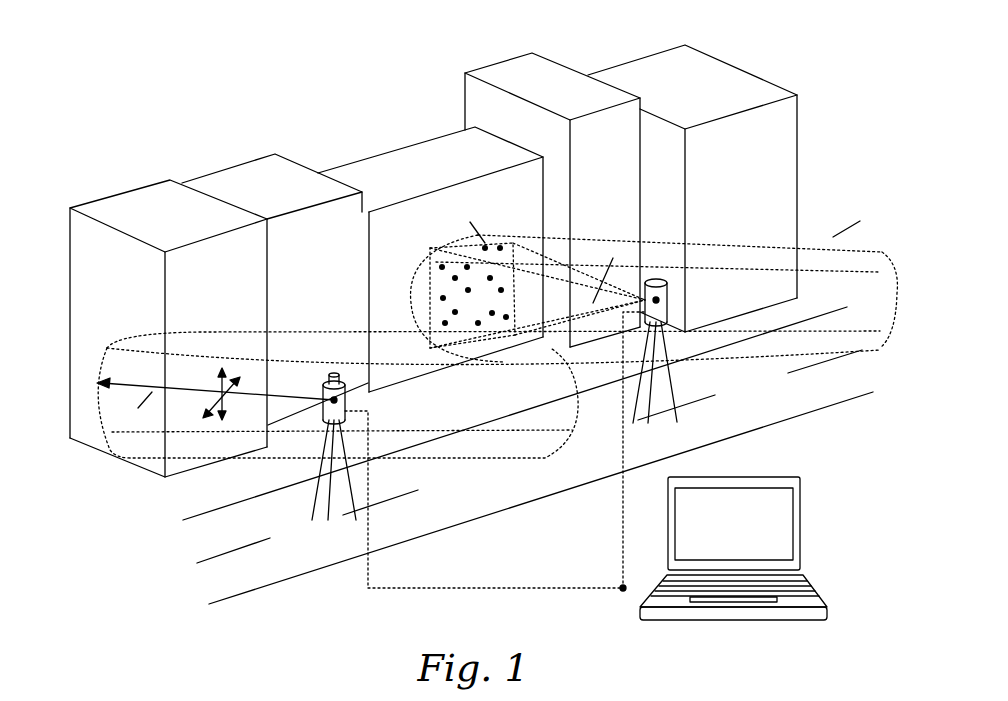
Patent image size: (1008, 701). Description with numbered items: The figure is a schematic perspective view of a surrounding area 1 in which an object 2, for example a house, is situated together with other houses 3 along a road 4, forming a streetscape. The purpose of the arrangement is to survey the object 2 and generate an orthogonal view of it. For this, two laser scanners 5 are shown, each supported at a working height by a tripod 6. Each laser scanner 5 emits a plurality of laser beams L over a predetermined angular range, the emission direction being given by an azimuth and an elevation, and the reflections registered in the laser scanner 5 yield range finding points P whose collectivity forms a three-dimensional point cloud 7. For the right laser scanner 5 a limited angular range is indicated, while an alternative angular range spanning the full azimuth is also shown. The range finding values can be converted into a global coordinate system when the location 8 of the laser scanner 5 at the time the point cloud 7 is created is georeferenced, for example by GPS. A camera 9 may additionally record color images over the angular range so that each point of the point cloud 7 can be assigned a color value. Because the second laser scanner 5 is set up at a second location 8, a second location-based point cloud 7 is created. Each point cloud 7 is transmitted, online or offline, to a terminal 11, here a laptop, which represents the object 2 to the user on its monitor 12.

The surrounding area 1 is at (176, 66).
The object 2 is at (412, 158).
The other houses 3 is at (210, 178).
The road 4 is at (312, 563).
The laser scanner 5 is at (323, 392).
The tripod 6 is at (317, 488).
The 3D point cloud 7 is at (412, 251).
The location of the laser scanner 8 is at (347, 401).
The camera 9 is at (328, 375).
The terminal 11 is at (765, 617).
The monitor 12 is at (783, 540).